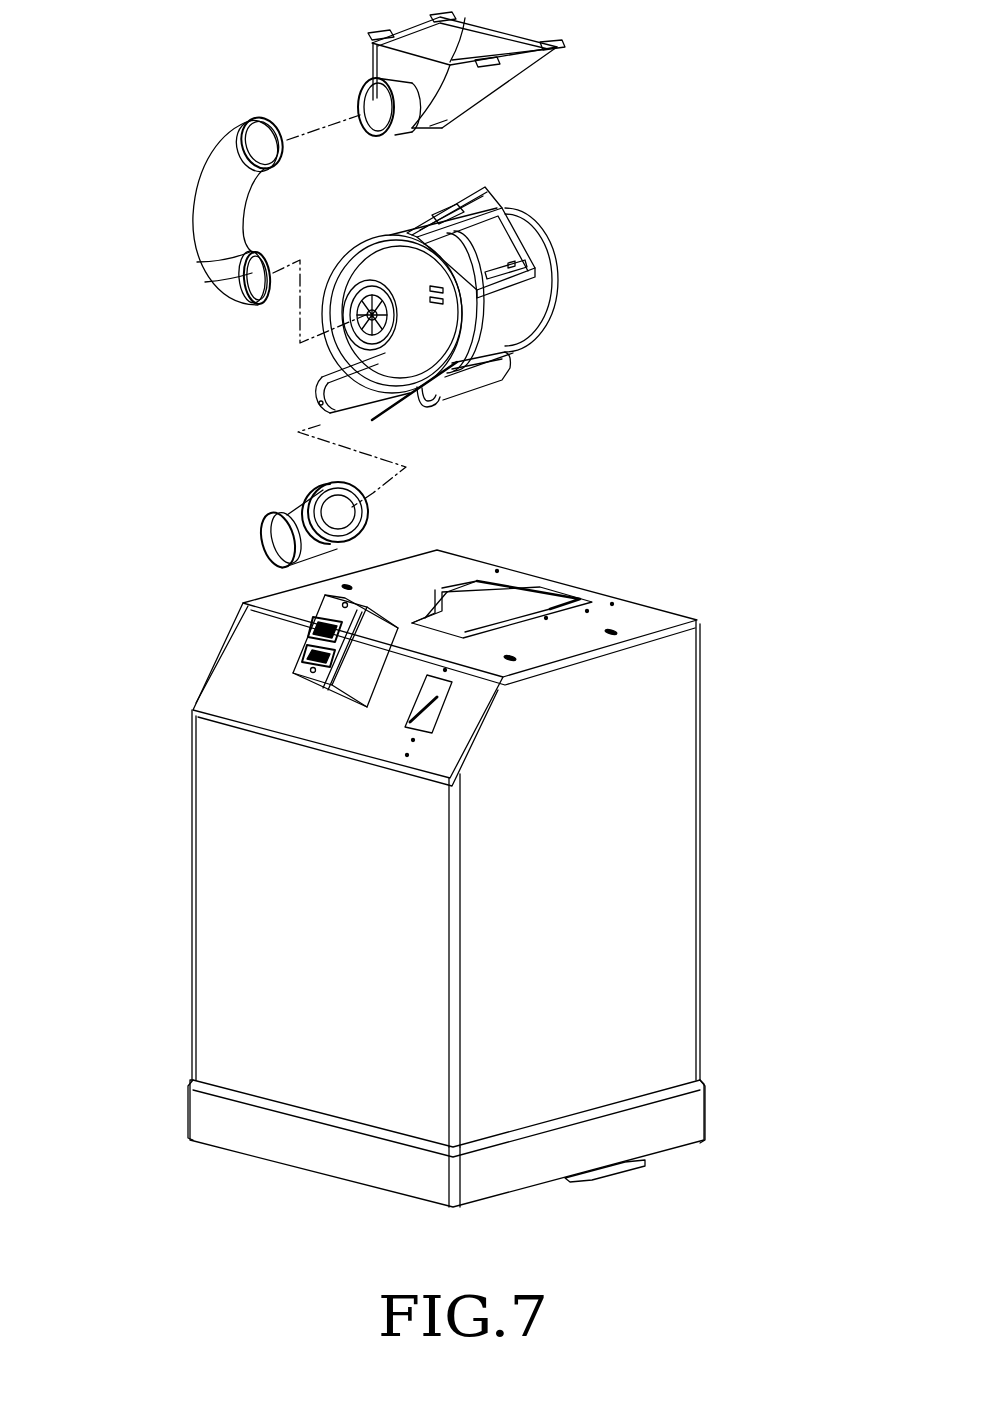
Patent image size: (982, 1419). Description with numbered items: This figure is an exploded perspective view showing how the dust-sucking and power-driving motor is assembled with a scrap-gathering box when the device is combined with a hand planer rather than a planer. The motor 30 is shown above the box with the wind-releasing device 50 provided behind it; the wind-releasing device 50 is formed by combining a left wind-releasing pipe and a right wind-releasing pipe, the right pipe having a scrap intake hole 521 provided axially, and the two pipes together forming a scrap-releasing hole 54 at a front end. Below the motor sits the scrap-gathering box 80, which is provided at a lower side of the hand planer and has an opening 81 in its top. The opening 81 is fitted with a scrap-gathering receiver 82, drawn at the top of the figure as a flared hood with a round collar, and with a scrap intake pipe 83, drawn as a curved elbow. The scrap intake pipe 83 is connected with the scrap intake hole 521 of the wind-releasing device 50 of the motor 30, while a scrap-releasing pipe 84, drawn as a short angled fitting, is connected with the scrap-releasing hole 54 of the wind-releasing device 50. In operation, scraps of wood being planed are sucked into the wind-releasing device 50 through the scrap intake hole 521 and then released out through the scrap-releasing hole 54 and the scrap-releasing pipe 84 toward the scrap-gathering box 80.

The motor 30 is at (557, 264).
The wind-releasing device 50 is at (409, 396).
The scrap-releasing hole 54 is at (330, 395).
The scrap intake hole 521 is at (355, 335).
The scrap-gathering box 80 is at (668, 787).
The opening 81 is at (452, 622).
The scrap-gathering receiver 82 is at (473, 88).
The scrap intake pipe 83 is at (208, 205).
The scrap-releasing pipe 84 is at (297, 518).